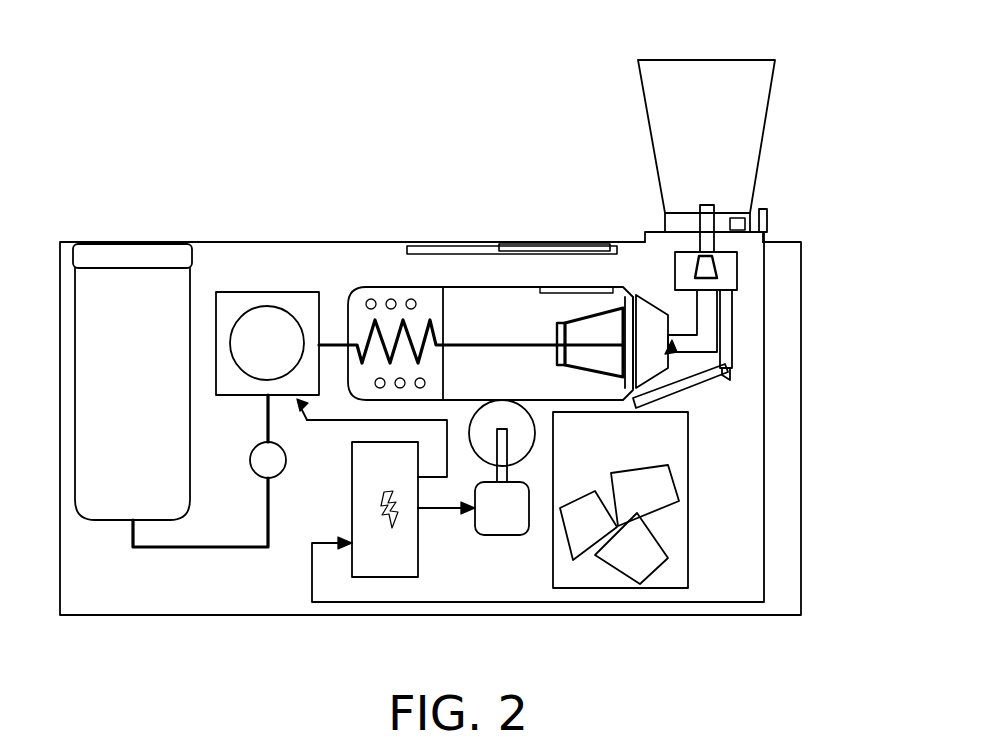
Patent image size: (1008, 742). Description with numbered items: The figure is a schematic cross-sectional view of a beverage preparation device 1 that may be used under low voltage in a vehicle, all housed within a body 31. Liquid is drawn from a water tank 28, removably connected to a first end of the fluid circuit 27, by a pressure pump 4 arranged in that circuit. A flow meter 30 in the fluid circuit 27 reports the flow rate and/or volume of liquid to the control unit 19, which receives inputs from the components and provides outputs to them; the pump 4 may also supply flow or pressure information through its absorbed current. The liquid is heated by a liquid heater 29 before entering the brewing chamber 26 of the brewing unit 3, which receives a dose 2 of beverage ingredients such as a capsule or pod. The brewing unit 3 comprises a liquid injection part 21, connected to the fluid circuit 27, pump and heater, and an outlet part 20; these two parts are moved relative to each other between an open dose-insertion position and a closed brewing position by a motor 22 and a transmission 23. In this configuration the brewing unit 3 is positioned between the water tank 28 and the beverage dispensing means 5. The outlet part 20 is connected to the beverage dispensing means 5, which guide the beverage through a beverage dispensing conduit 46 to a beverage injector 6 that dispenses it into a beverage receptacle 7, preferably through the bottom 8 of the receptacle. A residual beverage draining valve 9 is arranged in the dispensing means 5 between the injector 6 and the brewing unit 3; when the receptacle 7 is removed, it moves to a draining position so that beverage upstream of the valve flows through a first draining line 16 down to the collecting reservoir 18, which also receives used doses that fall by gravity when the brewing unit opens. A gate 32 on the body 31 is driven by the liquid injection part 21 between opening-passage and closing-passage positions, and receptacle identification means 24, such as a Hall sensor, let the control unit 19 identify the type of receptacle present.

The beverage preparation device 1 is at (836, 263).
The dose 2 is at (607, 322).
The brewing unit 3 is at (503, 286).
The pressure pump 4 is at (298, 291).
The beverage dispensing means 5 is at (736, 330).
The beverage injector 6 is at (706, 205).
The beverage receptacle 7 is at (771, 100).
The bottom 8 is at (677, 223).
The residual beverage draining valve 9 is at (718, 268).
The first draining line 16 is at (733, 358).
The collecting reservoir 18 is at (688, 500).
The control unit 19 is at (385, 578).
The outlet part 20 is at (640, 312).
The liquid injection part 21 is at (458, 300).
The motor 22 is at (509, 528).
The transmission 23 is at (512, 418).
The receptacle identification means 24 is at (769, 223).
The brewing chamber 26 is at (555, 335).
The fluid circuit 27 is at (200, 548).
The water tank 28 is at (93, 395).
The liquid heater 29 is at (383, 287).
The flow meter 30 is at (278, 458).
The body 31 is at (240, 241).
The gate 32 is at (505, 239).
The beverage dispensing conduit 46 is at (703, 348).